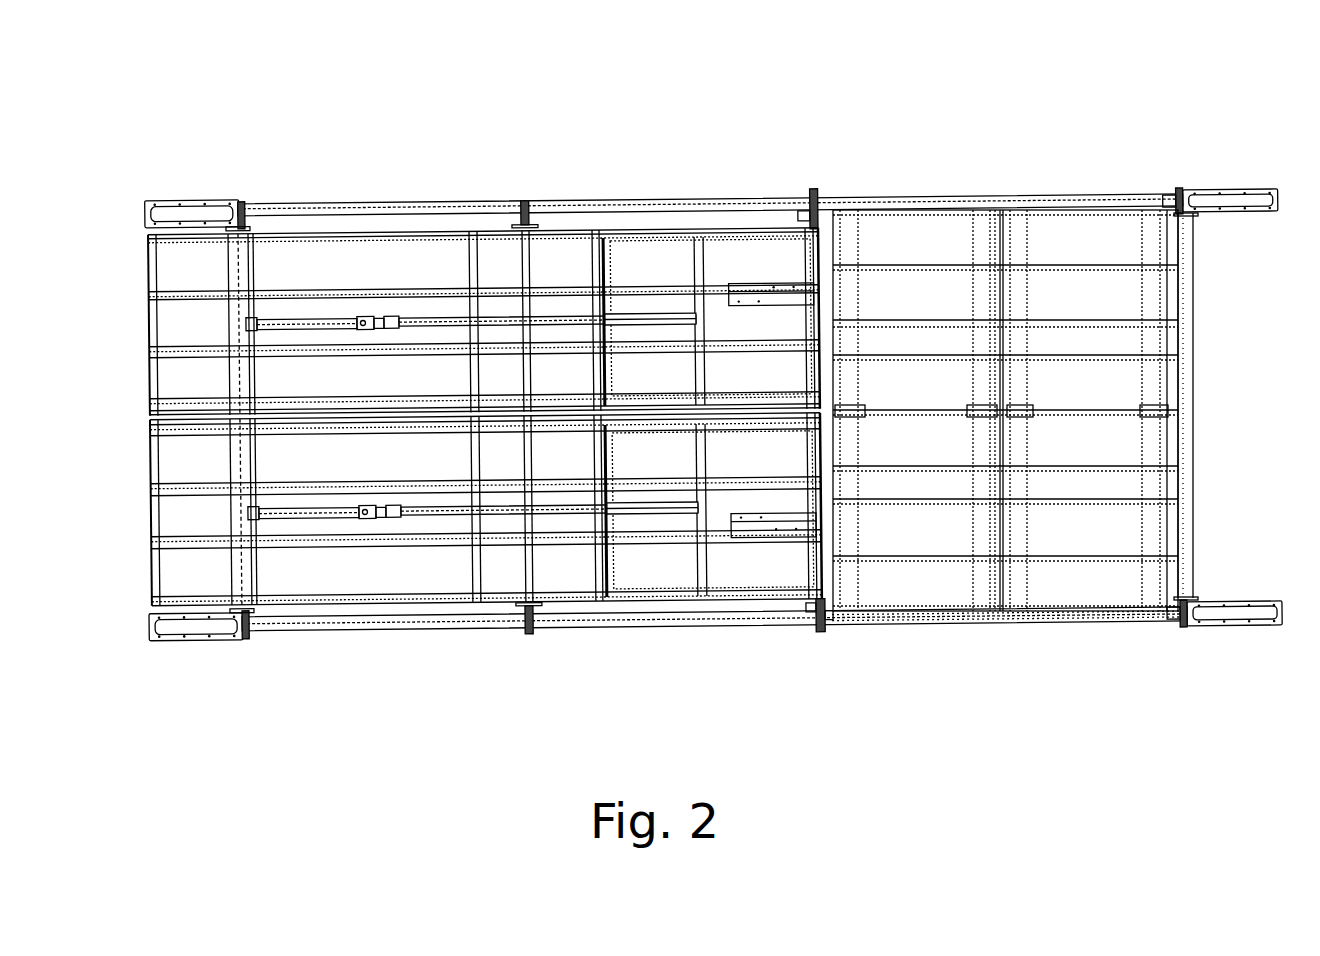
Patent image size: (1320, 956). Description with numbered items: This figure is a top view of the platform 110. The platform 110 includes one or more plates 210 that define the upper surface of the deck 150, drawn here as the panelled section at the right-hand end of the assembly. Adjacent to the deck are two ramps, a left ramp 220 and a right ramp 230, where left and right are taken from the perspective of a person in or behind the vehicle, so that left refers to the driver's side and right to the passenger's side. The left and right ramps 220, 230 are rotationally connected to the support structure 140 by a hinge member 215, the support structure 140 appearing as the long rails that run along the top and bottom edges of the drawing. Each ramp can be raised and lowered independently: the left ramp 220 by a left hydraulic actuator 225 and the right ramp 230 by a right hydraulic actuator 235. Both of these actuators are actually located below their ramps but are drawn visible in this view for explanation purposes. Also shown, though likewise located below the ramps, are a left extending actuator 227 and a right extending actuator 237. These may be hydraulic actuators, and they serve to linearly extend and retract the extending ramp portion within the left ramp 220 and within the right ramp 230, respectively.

The platform 110 is at (929, 156).
The support structure 140 is at (712, 205).
The deck 150 is at (917, 620).
The plate 210 is at (942, 243).
The hinge member 215 is at (818, 627).
The left ramp 220 is at (332, 578).
The left hydraulic actuator 225 is at (277, 520).
The left extending actuator 227 is at (513, 516).
The right ramp 230 is at (420, 267).
The right hydraulic actuator 235 is at (293, 322).
The right extending actuator 237 is at (545, 318).